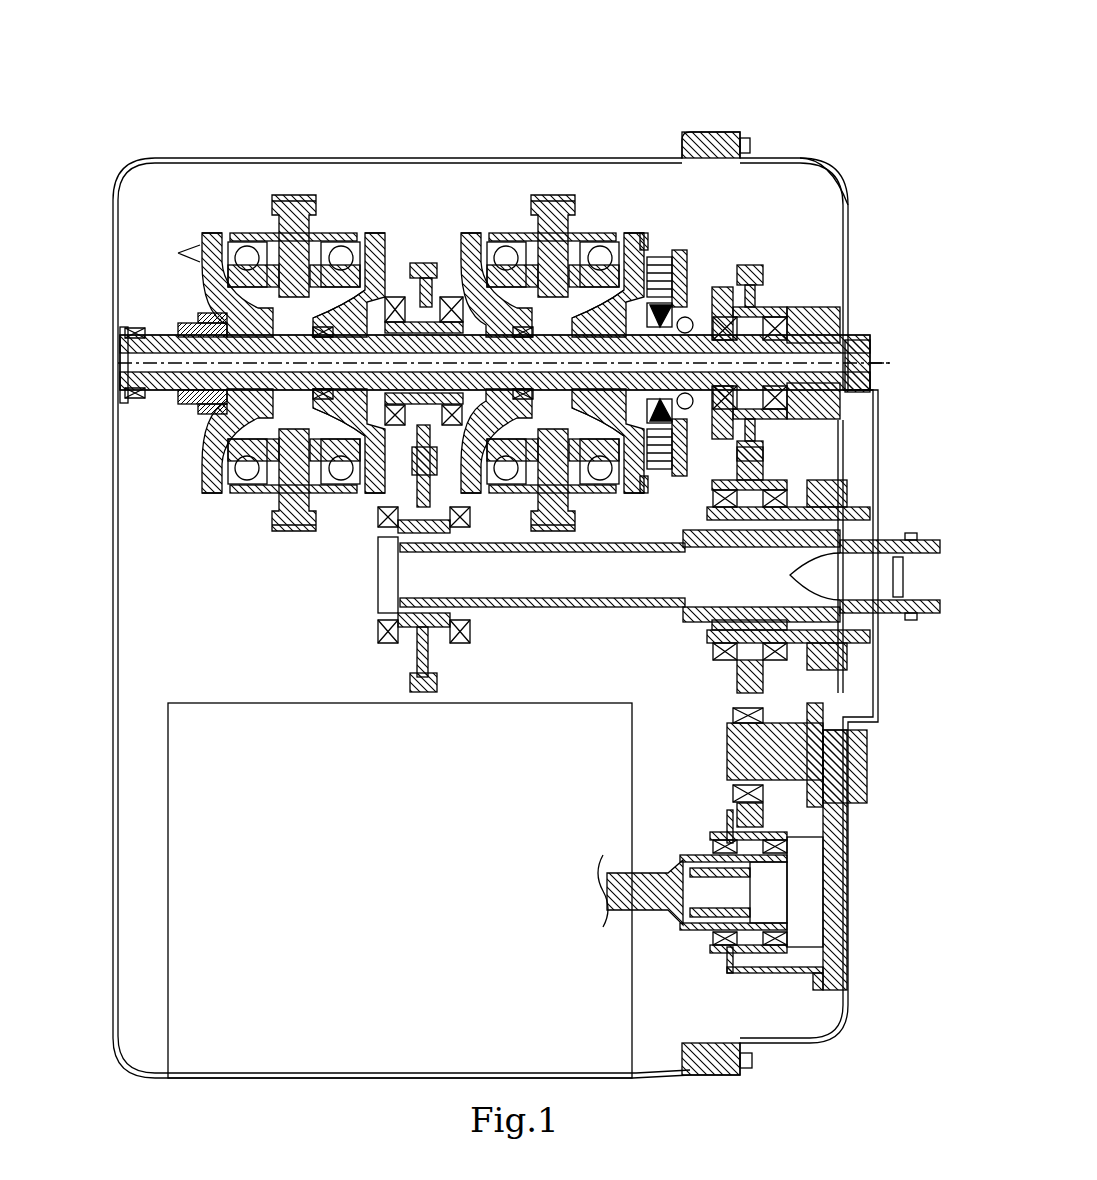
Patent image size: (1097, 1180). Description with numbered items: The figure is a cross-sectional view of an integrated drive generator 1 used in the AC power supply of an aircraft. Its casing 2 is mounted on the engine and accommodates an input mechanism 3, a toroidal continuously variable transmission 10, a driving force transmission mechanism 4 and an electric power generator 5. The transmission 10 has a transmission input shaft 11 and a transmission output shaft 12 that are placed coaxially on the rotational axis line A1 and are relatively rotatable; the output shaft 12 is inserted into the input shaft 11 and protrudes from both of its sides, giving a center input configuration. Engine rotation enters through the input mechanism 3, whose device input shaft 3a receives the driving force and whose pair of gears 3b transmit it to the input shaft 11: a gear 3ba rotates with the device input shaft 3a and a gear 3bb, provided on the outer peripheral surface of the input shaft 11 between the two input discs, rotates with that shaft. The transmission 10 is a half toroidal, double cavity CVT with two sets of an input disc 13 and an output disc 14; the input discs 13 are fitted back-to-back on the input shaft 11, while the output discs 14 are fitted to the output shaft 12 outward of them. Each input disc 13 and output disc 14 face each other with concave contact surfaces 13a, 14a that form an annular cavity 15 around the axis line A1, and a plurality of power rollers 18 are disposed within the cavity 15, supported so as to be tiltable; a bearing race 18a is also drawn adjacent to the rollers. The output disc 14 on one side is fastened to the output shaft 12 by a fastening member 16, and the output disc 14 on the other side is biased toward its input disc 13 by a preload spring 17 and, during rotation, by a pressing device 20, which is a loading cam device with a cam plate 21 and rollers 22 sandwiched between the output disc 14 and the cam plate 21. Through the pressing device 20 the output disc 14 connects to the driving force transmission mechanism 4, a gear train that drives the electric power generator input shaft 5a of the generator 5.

The integrated drive generator 1 is at (810, 142).
The casing 2 is at (125, 170).
The input mechanism 3 is at (620, 601).
The device input shaft 3a is at (510, 605).
The pair of gears 3b is at (372, 618).
The gear 3ba is at (410, 680).
The gear 3bb is at (422, 262).
The driving force transmission mechanism 4 is at (772, 300).
The electric power generator 5 is at (228, 712).
The electric power generator input shaft 5a is at (645, 913).
The toroidal continuously variable transmission 10 is at (180, 254).
The transmission input shaft 11 is at (433, 262).
The transmission output shaft 12 is at (170, 395).
The input disc 13 is at (382, 233).
The contact surface 13a is at (372, 233).
The output disc 14 is at (215, 233).
The contact surface 14a is at (212, 233).
The annular cavity 15 is at (292, 200).
The fastening member 16 is at (172, 328).
The preload spring 17 is at (662, 435).
The power roller 18 is at (247, 245).
The bearing inner race 18a is at (338, 262).
The pressing device 20 is at (692, 250).
The cam plate 21 is at (685, 250).
The rollers 22 is at (662, 257).
The rotational axis line A1 is at (893, 363).